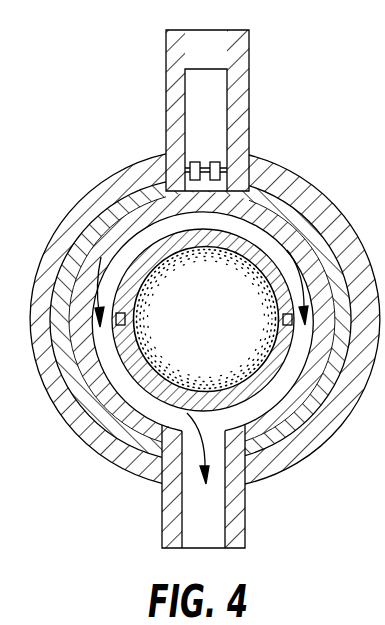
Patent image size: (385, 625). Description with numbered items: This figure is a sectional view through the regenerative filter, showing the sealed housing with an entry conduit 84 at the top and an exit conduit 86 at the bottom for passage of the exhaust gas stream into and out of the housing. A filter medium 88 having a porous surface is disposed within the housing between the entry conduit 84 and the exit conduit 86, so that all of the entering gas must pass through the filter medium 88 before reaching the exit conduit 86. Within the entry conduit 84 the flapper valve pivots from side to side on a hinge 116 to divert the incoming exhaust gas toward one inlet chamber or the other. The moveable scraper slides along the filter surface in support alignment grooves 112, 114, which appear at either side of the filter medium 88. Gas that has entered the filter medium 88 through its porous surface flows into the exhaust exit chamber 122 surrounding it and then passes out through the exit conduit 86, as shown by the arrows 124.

The entry conduit 84 is at (250, 79).
The exit conduit 86 is at (243, 537).
The filter medium 88 is at (232, 404).
The support alignment groove 112 is at (153, 381).
The support alignment groove 114 is at (283, 321).
The hinge 116 is at (215, 160).
The exhaust exit chamber 122 is at (272, 243).
The arrows 124 is at (258, 275).